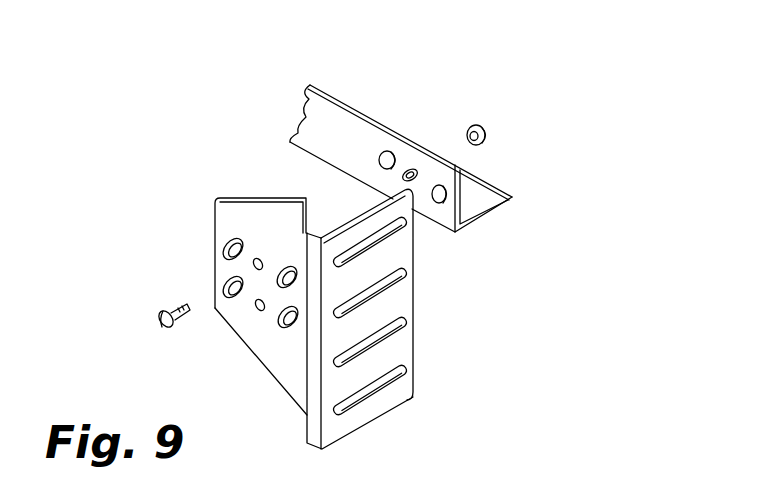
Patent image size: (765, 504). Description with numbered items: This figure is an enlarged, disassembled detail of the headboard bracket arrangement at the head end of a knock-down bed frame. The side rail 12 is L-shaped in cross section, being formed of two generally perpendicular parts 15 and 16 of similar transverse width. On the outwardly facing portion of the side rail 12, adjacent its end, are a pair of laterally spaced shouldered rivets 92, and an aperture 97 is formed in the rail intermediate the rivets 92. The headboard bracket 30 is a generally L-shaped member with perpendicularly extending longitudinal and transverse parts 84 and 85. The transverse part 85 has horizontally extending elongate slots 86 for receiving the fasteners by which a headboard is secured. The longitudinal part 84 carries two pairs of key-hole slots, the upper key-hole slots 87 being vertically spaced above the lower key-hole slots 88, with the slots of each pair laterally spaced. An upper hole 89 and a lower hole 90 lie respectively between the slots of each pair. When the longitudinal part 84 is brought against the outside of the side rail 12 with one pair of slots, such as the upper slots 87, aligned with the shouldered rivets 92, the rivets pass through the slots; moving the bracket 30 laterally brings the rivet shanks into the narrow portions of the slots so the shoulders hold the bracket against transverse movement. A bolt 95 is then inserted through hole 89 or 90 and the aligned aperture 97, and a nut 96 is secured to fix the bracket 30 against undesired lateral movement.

The side rail 12 is at (310, 130).
The perpendicular part of side rail 15 is at (353, 123).
The perpendicular part of side rail 16 is at (497, 192).
The headboard bracket 30 is at (322, 304).
The longitudinal part 84 is at (262, 212).
The transverse part 85 is at (400, 348).
The elongate slots 86 is at (400, 312).
The upper key-hole slots 87 is at (229, 237).
The lower key-hole slots 88 is at (222, 289).
The upper hole 89 is at (257, 258).
The lower hole 90 is at (258, 311).
The shouldered rivets 92 is at (393, 152).
The bolt 95 is at (160, 322).
The nut 96 is at (488, 128).
The aperture 97 is at (412, 172).